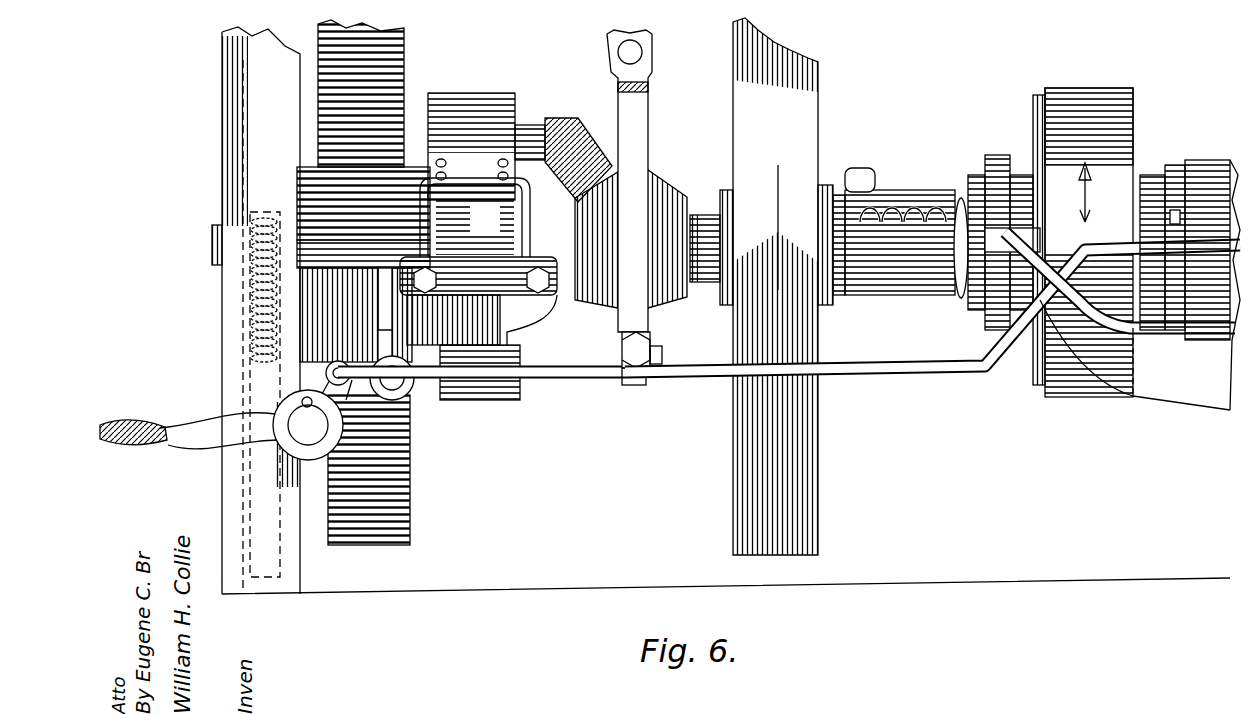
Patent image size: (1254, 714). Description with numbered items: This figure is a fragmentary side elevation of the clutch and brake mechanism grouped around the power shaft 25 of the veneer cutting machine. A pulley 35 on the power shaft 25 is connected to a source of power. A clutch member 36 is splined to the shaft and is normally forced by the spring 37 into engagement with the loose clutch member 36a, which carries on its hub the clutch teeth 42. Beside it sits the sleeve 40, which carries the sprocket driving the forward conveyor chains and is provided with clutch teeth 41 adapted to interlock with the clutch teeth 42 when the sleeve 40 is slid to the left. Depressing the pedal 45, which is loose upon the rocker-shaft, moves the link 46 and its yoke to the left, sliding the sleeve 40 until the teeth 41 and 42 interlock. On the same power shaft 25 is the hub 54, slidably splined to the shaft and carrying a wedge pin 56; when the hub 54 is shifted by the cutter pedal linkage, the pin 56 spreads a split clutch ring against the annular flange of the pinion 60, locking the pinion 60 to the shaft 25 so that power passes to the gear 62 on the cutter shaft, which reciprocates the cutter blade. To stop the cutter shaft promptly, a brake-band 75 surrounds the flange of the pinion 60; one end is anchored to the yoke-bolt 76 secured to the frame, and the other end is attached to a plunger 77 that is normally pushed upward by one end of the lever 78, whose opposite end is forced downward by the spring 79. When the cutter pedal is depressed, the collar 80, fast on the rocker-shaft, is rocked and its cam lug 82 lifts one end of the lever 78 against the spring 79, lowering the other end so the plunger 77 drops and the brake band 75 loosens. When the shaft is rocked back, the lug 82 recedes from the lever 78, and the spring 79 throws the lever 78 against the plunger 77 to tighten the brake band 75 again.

The power shaft 25 is at (702, 214).
The pulley 35 is at (815, 142).
The clutch member 36 is at (1033, 118).
The loose clutch member 36a is at (1088, 95).
The spring 37 is at (958, 200).
The sleeve 40 is at (1196, 162).
The clutch teeth 41 is at (1174, 188).
The clutch teeth 42 is at (1160, 175).
The pedal 45 is at (140, 420).
The link 46 is at (904, 373).
The hub 54 is at (660, 188).
The wedge pin 56 is at (540, 127).
The pinion 60 is at (412, 172).
The gear 62 is at (405, 58).
The brake-band 75 is at (488, 100).
The yoke-bolt 76 is at (532, 215).
The plunger 77 is at (515, 348).
The lever 78 is at (482, 385).
The spring 79 is at (250, 328).
The collar 80 is at (285, 452).
The cam lug 82 is at (410, 440).